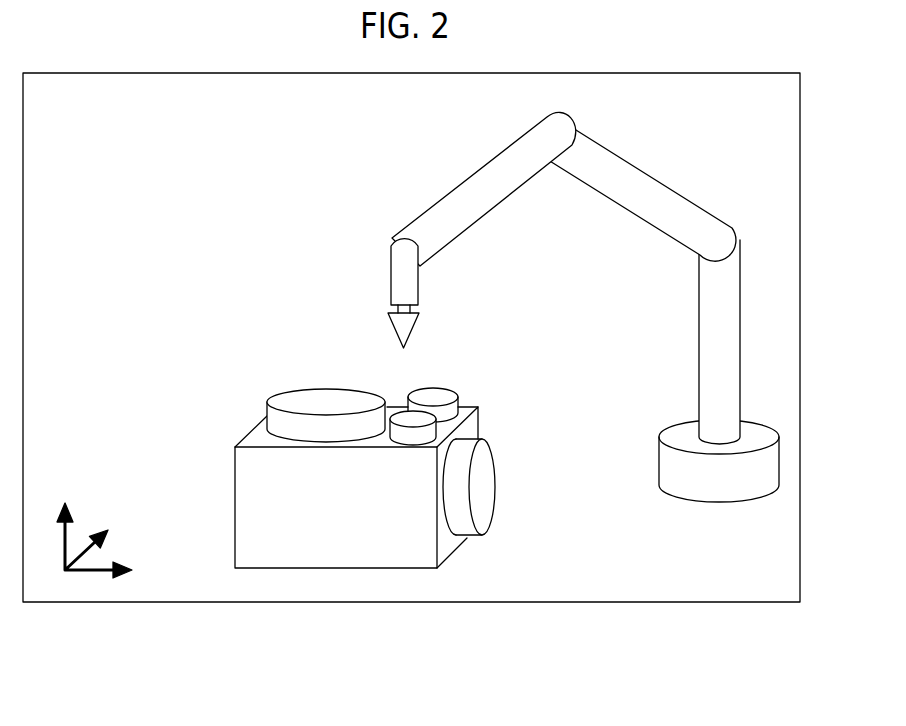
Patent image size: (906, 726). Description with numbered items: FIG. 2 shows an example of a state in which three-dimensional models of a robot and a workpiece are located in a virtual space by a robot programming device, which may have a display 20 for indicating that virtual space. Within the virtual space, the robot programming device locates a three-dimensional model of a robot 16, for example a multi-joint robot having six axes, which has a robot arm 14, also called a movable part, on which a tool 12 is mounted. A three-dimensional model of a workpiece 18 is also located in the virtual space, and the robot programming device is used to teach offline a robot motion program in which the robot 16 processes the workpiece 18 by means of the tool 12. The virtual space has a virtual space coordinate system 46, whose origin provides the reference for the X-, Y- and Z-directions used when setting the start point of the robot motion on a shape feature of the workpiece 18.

The tool 12 is at (400, 277).
The robot arm 14 is at (463, 195).
The robot 16 is at (538, 304).
The workpiece 18 is at (506, 402).
The display 20 is at (760, 602).
The virtual space coordinate system 46 is at (92, 573).